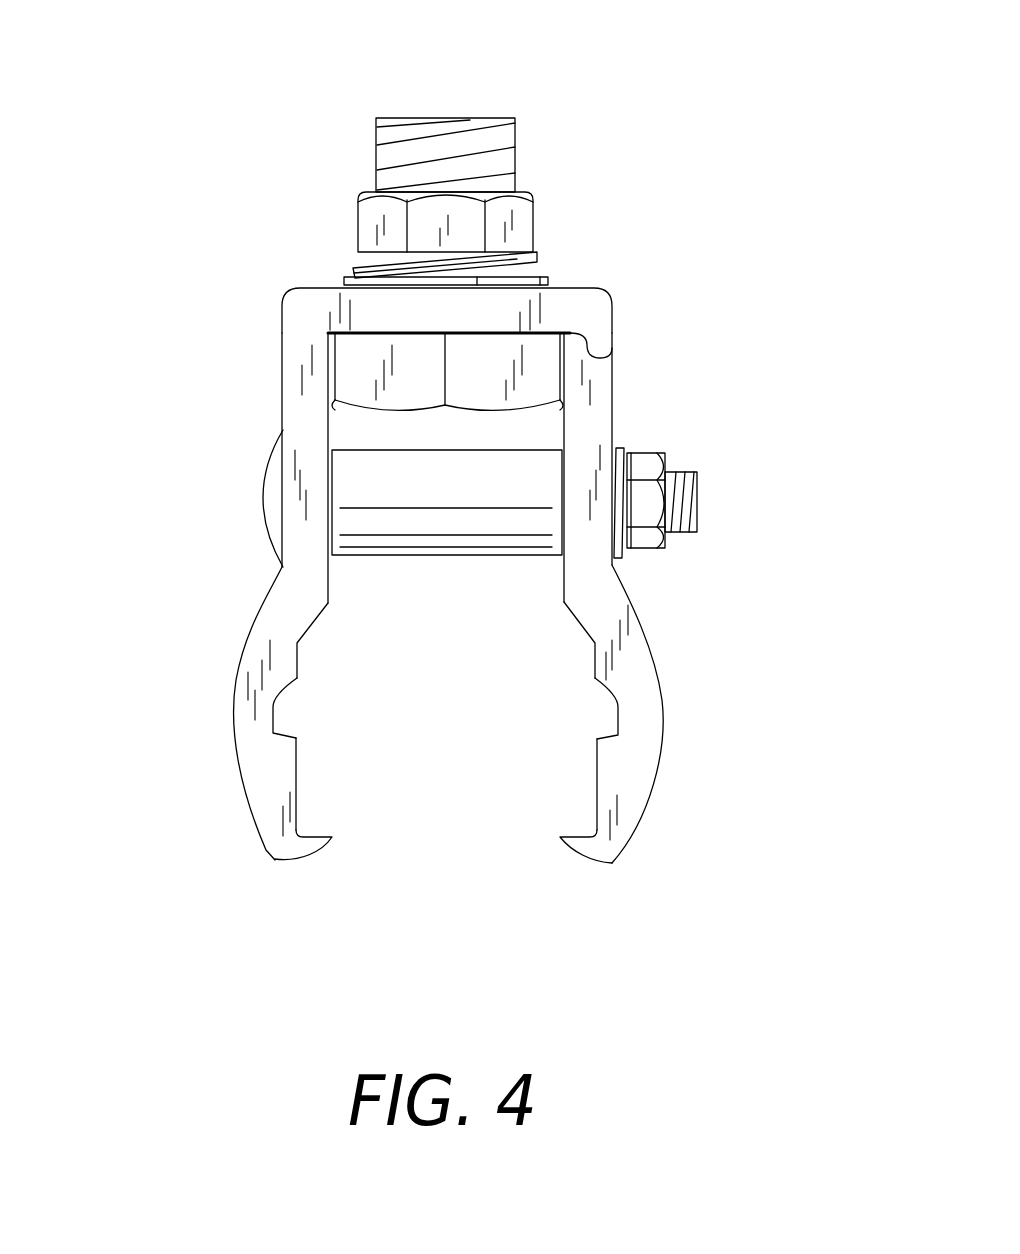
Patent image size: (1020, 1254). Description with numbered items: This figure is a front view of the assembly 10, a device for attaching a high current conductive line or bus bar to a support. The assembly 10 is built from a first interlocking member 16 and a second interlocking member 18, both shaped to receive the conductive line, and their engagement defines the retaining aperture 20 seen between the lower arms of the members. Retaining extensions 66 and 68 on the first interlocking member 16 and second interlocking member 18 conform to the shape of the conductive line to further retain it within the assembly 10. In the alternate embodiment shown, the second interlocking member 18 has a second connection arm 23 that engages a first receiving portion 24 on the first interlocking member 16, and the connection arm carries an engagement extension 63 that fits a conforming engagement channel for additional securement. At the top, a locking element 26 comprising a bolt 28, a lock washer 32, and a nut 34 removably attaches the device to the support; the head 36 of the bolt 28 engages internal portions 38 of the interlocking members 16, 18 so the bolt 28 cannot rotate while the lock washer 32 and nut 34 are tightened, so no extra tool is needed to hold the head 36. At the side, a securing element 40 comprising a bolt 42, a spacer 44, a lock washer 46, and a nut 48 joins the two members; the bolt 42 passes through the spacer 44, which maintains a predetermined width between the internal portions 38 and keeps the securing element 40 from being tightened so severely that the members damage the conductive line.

The assembly 10 is at (735, 181).
The first interlocking member 16 is at (635, 833).
The second interlocking member 18 is at (256, 832).
The retaining aperture 20 is at (420, 822).
The second connection arm 23 is at (580, 288).
The first receiving portion 24 is at (613, 355).
The locking element 26 is at (560, 172).
The bolt 28 is at (502, 117).
The lock washer 32 is at (350, 270).
The nut 34 is at (356, 200).
The head 36 is at (395, 412).
The internal portions 38 is at (333, 420).
The securing element 40 is at (244, 531).
The bolt 42 is at (698, 510).
The spacer 44 is at (420, 560).
The lock washer 46 is at (615, 560).
The nut 48 is at (668, 553).
The engagement extensions 63 is at (613, 320).
The retaining extension 66 is at (322, 857).
The retaining extension 68 is at (290, 735).